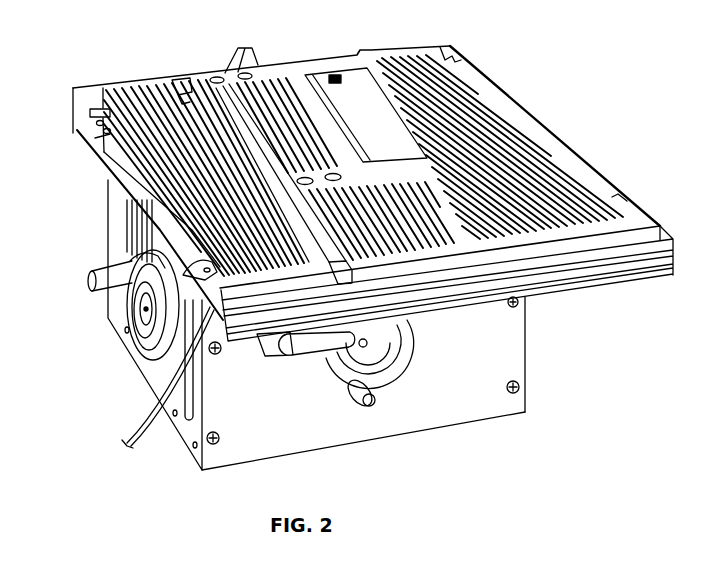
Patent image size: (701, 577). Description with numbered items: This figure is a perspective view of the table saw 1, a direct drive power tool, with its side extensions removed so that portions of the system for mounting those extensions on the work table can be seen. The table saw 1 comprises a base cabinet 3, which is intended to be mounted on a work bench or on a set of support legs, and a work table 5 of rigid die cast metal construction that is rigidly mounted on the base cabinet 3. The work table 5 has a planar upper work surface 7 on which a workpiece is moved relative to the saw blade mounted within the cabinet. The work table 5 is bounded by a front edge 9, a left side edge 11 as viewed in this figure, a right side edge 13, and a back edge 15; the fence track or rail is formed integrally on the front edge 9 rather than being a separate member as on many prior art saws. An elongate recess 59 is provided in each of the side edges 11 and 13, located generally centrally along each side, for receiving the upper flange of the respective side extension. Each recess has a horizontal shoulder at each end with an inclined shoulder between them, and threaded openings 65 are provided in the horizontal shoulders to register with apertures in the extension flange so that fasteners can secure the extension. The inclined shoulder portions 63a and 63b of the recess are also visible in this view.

The table saw 1 is at (514, 423).
The base cabinet 3 is at (395, 446).
The work table 5 is at (214, 66).
The upper work surface 7 is at (174, 82).
The front edge 9 is at (582, 270).
The left side edge 11 is at (92, 164).
The right side edge 13 is at (548, 124).
The back edge 15 is at (287, 53).
The elongate recess 59 is at (512, 100).
The handwheel 63a is at (143, 306).
The corner block 63b is at (97, 132).
The threaded opening 65 is at (99, 118).